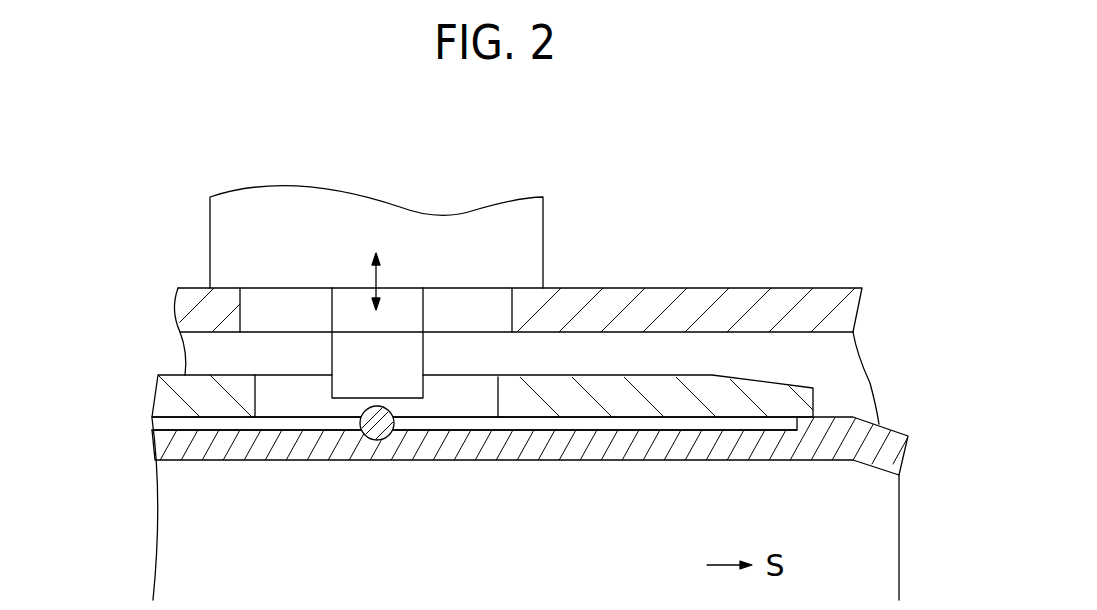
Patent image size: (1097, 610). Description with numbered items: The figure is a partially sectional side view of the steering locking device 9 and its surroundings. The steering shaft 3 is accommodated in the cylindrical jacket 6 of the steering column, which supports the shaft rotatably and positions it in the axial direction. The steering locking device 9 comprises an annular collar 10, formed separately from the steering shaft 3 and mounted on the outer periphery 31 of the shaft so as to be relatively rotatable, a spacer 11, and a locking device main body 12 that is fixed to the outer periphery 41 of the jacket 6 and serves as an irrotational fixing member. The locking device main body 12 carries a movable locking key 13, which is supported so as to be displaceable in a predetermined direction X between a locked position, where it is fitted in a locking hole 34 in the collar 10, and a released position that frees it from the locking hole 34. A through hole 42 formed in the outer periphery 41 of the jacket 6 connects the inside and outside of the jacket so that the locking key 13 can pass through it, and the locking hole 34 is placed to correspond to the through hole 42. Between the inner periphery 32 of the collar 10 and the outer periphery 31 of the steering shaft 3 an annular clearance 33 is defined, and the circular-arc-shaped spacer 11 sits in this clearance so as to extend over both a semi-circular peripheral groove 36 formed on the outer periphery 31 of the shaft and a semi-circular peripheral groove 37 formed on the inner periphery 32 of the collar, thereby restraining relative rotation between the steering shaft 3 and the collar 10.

The steering shaft 3 is at (879, 424).
The jacket 6 is at (832, 288).
The steering locking device 9 is at (645, 258).
The collar 10 is at (712, 376).
The spacer 11 is at (363, 450).
The locking device main body 12 is at (462, 214).
The locking key 13 is at (388, 370).
The outer periphery of the steering shaft 31 is at (641, 430).
The inner periphery of the collar 32 is at (763, 418).
The annular clearance 33 is at (573, 424).
The locking hole 34 is at (498, 398).
The peripheral groove 36 is at (393, 435).
The peripheral groove 37 is at (358, 418).
The outer periphery of the jacket 41 is at (585, 288).
The through hole 42 is at (511, 312).
The predetermined direction X is at (374, 279).